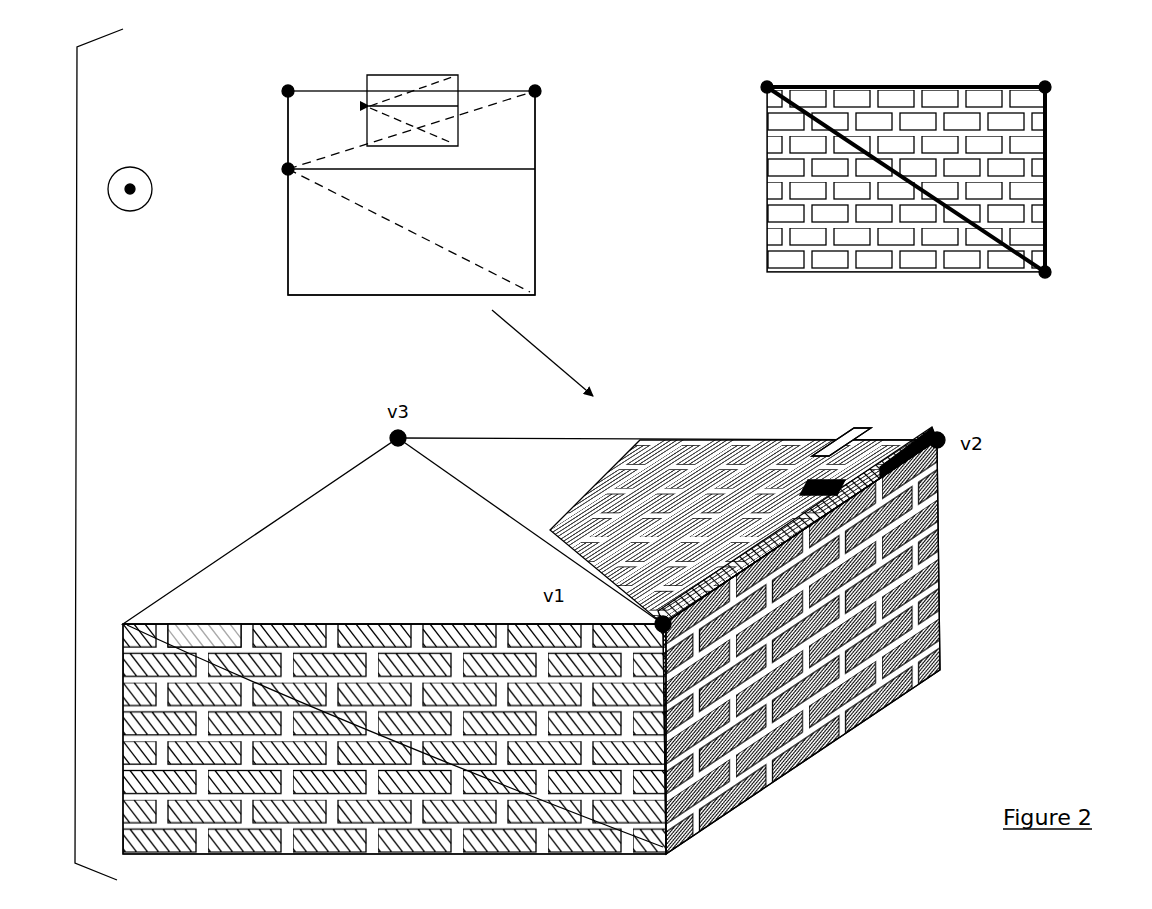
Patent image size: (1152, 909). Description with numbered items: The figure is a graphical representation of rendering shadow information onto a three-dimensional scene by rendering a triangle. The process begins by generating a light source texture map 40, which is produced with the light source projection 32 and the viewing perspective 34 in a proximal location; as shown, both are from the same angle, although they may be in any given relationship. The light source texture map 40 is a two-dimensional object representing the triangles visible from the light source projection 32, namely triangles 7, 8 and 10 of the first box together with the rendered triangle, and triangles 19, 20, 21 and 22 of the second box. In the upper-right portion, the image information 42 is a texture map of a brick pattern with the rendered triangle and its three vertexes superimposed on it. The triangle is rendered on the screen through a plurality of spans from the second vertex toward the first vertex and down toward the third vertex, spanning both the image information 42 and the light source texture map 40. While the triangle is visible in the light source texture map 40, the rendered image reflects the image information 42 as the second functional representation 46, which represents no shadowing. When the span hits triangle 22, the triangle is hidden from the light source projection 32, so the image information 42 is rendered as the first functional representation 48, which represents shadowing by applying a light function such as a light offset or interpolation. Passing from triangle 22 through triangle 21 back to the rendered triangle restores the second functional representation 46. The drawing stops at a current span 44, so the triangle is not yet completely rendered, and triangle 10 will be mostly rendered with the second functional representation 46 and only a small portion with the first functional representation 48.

The triangle 7 is at (411, 232).
The triangle 8 is at (411, 185).
The triangle 10 is at (517, 130).
The triangle 19 is at (389, 126).
The triangle 20 is at (413, 126).
The triangle 21 is at (435, 90).
The triangle 22 is at (389, 90).
The light source projection 32 is at (140, 161).
The viewing perspective 34 is at (135, 235).
The light source texture map 40 is at (405, 151).
The image information 42 is at (815, 390).
The current span 44 is at (680, 436).
The second functional representation 46 is at (832, 452).
The first functional representation 48 is at (841, 490).